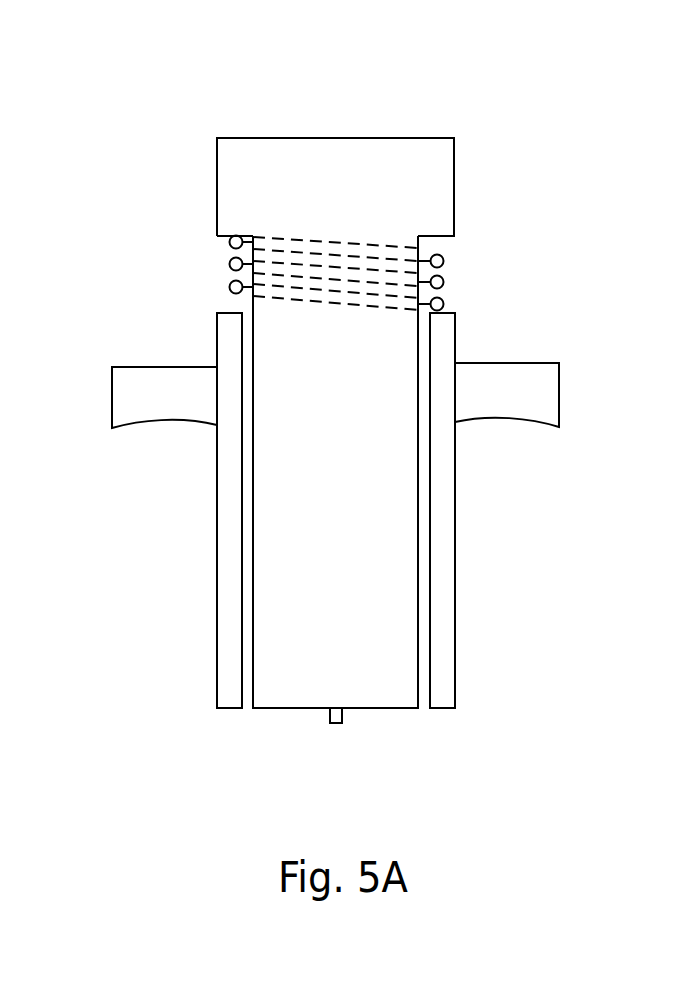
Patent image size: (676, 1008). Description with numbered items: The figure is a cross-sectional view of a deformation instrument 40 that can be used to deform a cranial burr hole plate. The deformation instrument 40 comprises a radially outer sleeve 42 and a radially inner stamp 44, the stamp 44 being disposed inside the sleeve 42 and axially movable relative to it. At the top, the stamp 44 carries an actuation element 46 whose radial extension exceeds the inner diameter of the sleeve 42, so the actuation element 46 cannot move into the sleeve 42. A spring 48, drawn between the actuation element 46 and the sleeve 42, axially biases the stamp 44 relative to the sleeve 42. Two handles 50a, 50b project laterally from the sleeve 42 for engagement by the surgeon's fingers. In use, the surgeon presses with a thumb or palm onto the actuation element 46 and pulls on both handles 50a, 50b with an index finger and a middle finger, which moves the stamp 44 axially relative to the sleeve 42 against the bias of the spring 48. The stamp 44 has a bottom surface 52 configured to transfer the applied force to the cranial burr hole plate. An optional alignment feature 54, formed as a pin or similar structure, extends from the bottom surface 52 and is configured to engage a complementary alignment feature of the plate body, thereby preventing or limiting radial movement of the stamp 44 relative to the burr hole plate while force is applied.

The deformation instrument 40 is at (150, 106).
The radially outer sleeve 42 is at (226, 482).
The radially inner stamp 44 is at (336, 512).
The actuation element 46 is at (356, 183).
The spring 48 is at (437, 280).
The handle 50a is at (162, 382).
The handle 50b is at (517, 383).
The bottom surface 52 is at (383, 707).
The alignment feature 54 is at (338, 725).